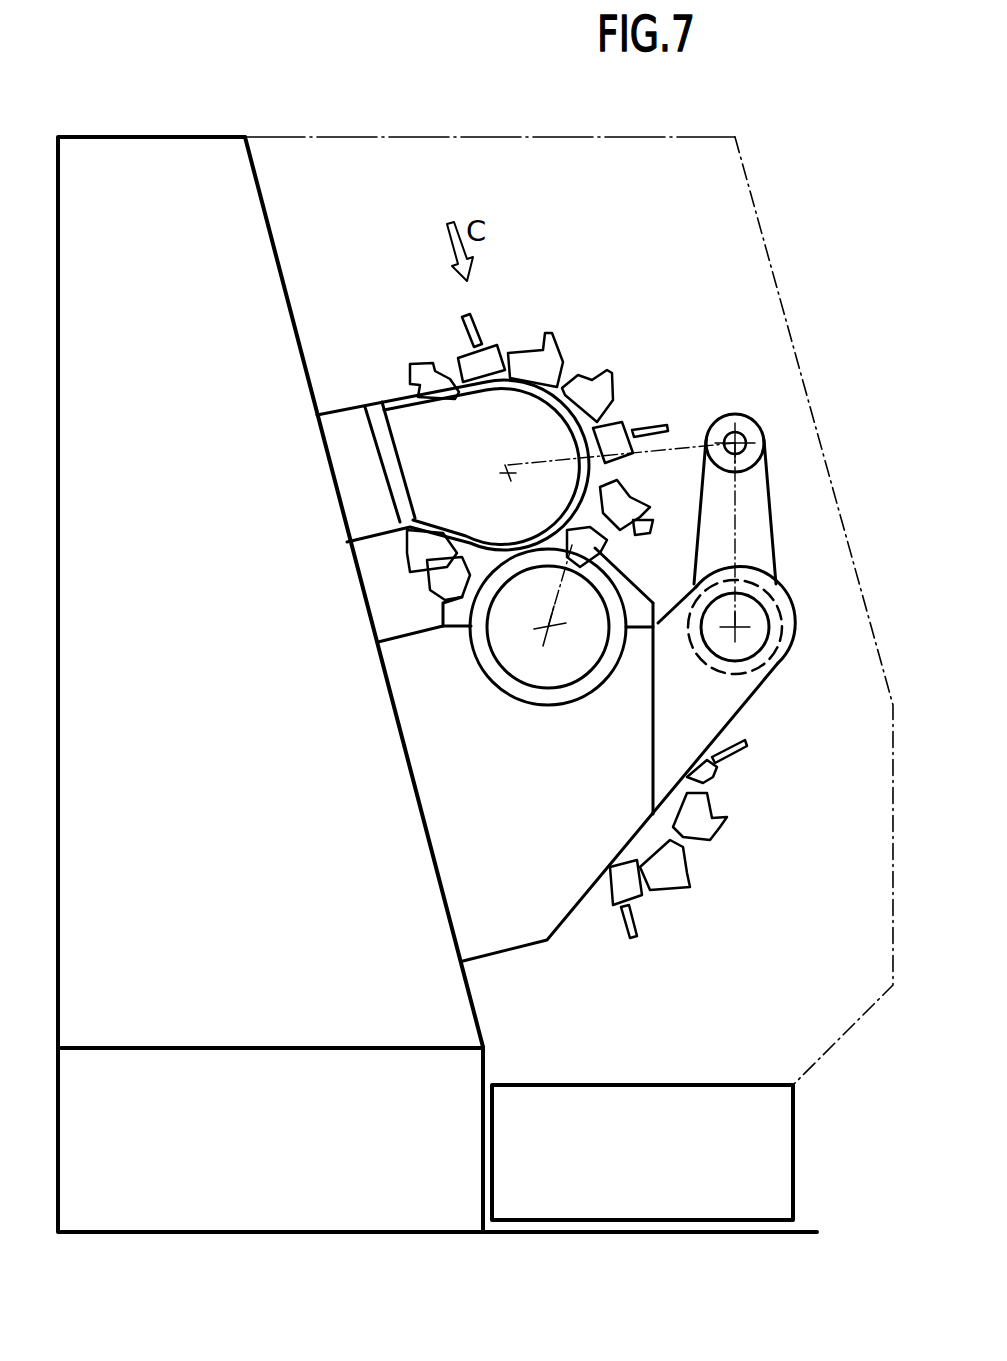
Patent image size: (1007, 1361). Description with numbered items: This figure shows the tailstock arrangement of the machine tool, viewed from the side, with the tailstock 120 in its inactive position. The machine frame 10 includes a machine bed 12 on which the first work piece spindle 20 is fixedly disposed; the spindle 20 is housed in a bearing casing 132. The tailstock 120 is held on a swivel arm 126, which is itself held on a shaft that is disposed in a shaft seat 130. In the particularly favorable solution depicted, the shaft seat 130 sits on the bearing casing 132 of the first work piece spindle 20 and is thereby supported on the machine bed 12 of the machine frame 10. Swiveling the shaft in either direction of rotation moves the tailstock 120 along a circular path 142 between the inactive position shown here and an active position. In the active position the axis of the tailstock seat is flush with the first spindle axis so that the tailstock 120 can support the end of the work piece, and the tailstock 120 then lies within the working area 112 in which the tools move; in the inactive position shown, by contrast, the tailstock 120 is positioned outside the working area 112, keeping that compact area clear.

The machine frame 10 is at (475, 648).
The machine bed 12 is at (319, 904).
The first work piece spindle 20 is at (497, 683).
The working area 112 is at (653, 567).
The tailstock 120 is at (750, 432).
The swivel arm 126 is at (758, 522).
The shaft seat 130 is at (753, 683).
The bearing casing 132 is at (463, 743).
The circular path 142 is at (677, 450).